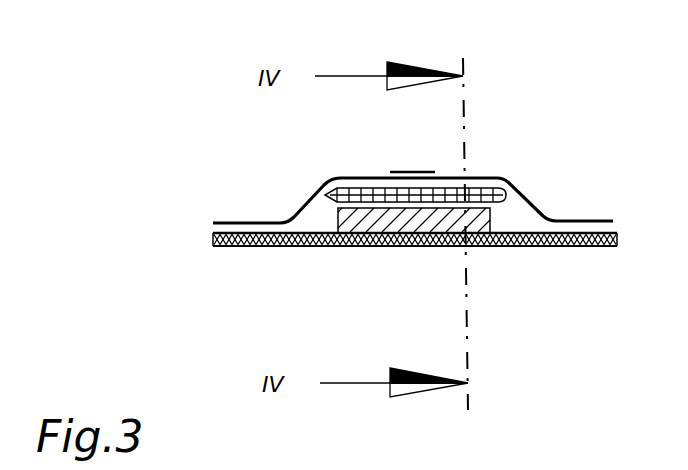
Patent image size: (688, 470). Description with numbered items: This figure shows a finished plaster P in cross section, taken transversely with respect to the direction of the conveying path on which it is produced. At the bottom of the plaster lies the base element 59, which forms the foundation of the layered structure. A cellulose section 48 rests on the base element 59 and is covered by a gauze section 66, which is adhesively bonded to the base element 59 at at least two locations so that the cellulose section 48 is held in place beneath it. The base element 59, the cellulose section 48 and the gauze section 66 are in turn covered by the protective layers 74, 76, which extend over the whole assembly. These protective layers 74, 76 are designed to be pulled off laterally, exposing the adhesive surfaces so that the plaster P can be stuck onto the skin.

The plaster P is at (572, 80).
The protective layer 74 is at (325, 178).
The protective layer 76 is at (477, 176).
The gauze section 66 is at (507, 186).
The cellulose section 48 is at (490, 218).
The base element 59 is at (518, 246).